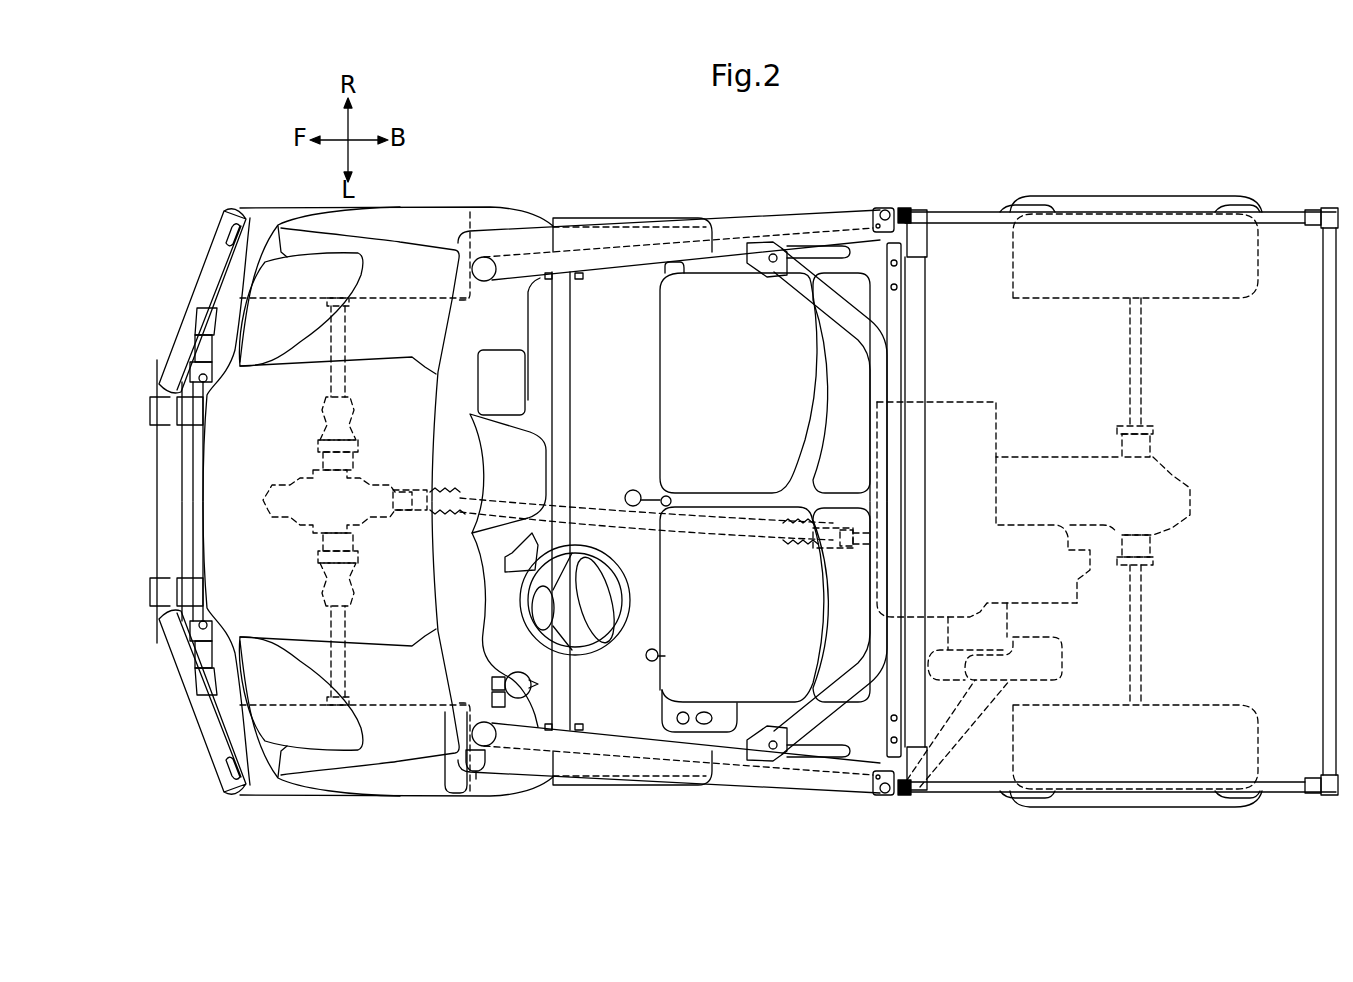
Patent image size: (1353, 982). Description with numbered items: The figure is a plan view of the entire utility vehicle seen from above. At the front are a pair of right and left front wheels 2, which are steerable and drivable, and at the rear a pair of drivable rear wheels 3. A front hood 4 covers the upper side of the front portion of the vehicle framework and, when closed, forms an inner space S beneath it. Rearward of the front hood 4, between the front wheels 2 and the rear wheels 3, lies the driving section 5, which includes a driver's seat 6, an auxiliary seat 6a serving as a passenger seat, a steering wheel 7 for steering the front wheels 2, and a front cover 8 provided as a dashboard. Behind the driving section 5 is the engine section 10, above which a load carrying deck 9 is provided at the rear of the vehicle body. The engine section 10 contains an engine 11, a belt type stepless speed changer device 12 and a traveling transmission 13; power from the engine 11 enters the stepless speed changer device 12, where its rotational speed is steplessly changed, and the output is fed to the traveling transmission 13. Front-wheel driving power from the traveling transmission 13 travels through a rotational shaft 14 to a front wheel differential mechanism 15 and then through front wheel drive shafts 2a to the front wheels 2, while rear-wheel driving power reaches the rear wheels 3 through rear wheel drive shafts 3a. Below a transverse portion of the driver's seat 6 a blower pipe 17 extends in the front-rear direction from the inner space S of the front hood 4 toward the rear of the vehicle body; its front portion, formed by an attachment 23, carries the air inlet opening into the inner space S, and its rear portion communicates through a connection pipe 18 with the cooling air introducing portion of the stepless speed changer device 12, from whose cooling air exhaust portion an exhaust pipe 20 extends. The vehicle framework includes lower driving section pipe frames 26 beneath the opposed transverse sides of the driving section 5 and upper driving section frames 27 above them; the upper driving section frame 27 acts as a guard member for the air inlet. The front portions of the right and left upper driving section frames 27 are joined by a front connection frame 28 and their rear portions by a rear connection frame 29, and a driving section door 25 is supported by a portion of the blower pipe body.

The front wheels 2 is at (258, 217).
The front wheel drive shafts 2a is at (342, 367).
The rear wheels 3 is at (1132, 210).
The rear wheel drive shafts 3a is at (1142, 362).
The front hood 4 is at (413, 252).
The driving section 5 is at (632, 695).
The driver's seat 6 is at (657, 663).
The auxiliary seat 6a is at (658, 386).
The steering wheel 7 is at (625, 582).
The front cover 8 is at (503, 290).
The load carrying deck 9 is at (957, 232).
The engine section 10 is at (967, 380).
The engine 11 is at (985, 400).
The belt type stepless speed changer device 12 is at (1070, 593).
The traveling transmission 13 is at (1172, 472).
The rotational shaft 14 is at (698, 533).
The front wheel differential mechanism 15 is at (295, 492).
The blower pipe 17 is at (760, 785).
The connection pipe 18 is at (968, 712).
The exhaust pipe 20 is at (1062, 656).
The attachment device 23 is at (483, 777).
The driving section door 25 is at (596, 218).
The lower driving section pipe frames 26 is at (753, 219).
The upper driving section frames 27 is at (650, 252).
The front connection frame 28 is at (568, 457).
The rear connection frame 29 is at (857, 298).
The inner space S is at (452, 758).